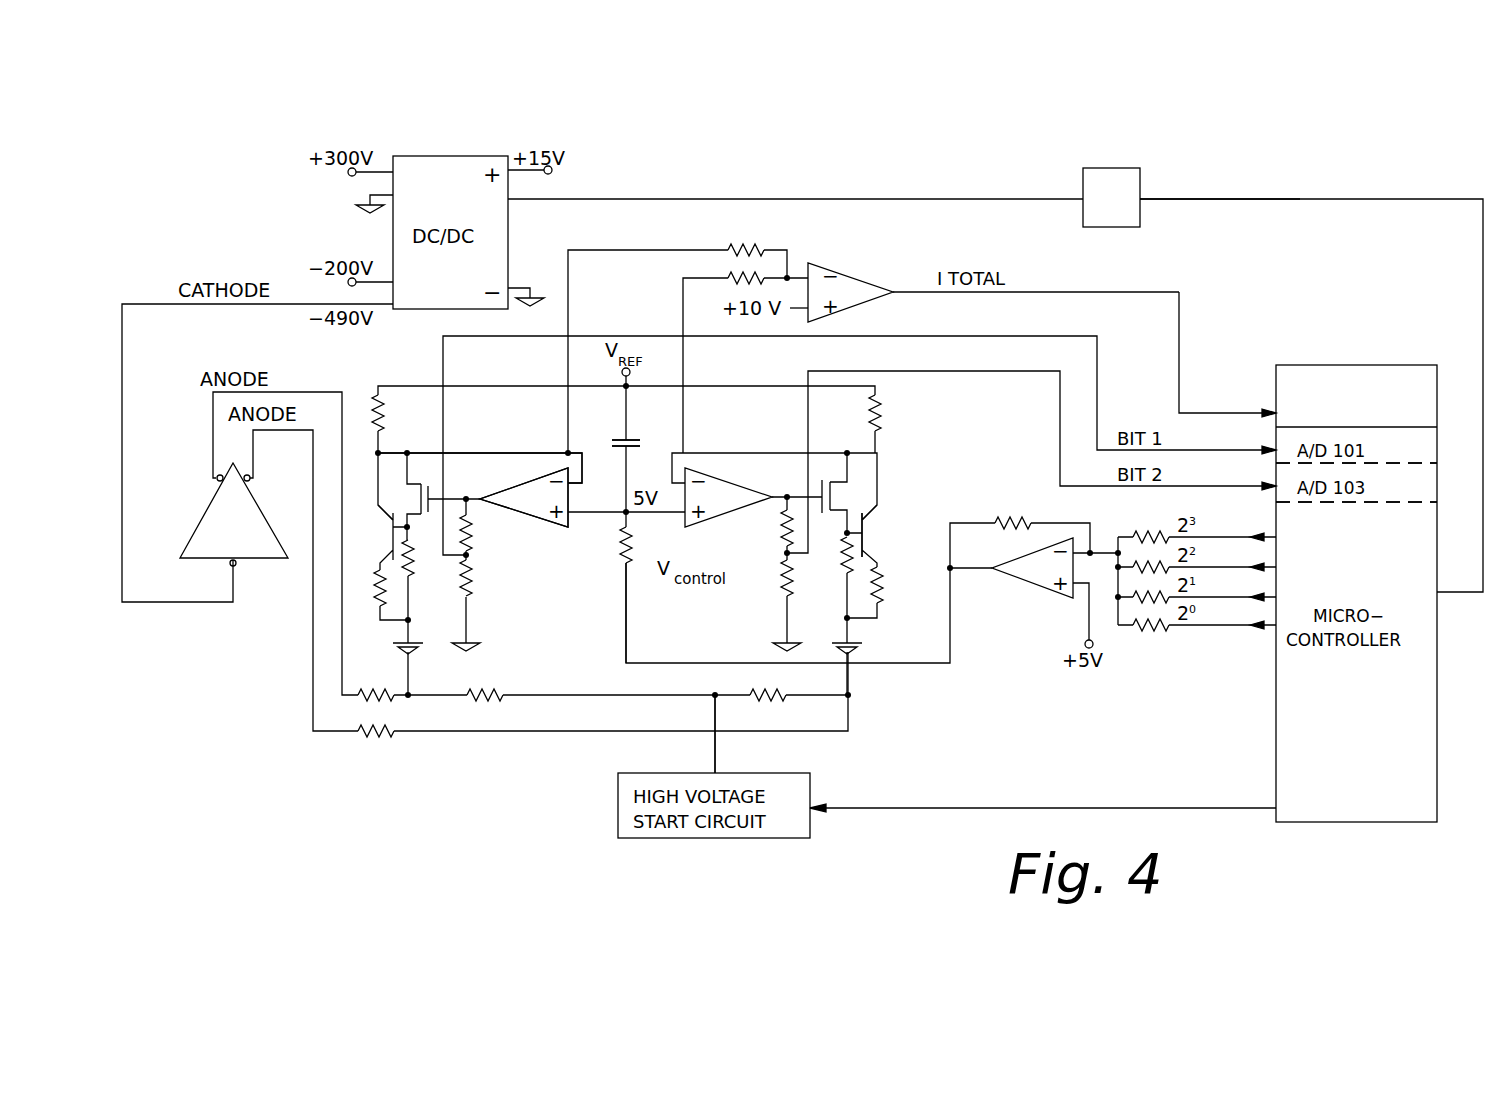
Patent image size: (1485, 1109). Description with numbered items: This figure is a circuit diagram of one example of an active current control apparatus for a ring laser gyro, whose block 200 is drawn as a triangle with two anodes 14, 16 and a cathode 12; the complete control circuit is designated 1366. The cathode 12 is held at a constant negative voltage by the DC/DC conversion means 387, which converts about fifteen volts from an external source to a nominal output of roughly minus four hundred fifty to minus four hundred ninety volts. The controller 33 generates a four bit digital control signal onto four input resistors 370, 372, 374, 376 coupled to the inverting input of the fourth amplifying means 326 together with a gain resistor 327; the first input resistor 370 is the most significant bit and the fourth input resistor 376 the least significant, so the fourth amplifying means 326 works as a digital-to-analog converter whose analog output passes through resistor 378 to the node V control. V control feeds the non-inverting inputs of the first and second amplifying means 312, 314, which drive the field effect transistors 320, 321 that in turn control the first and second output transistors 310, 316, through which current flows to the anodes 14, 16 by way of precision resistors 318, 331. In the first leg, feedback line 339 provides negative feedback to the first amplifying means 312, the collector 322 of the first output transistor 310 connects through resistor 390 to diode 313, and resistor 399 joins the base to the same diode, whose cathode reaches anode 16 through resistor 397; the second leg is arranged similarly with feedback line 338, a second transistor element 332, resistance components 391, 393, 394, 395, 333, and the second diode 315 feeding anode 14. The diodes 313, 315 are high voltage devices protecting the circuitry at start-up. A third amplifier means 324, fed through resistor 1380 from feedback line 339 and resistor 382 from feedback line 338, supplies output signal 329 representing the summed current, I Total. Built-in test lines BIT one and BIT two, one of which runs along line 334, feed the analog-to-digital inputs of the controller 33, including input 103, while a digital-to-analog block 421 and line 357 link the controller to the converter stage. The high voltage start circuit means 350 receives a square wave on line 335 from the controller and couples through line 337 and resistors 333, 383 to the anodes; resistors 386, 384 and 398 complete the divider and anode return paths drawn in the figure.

The DC/DC conversion means 387 is at (493, 162).
The D/A converter 421 is at (1111, 197).
The D/A output line 357 is at (1243, 199).
The control circuit 1366 is at (1475, 132).
The resistor 1380 is at (760, 250).
The resistor 382 is at (728, 278).
The third amplifier means 324 is at (855, 276).
The output signal 329 is at (1085, 292).
The feedback line 334 is at (1020, 336).
The precision resistor 318 is at (386, 424).
The precision resistor 331 is at (882, 412).
The feedback line 339 is at (483, 453).
The resistor 395 is at (636, 440).
The field effect transistor 320 is at (440, 496).
The first amplifying means 312 is at (557, 528).
The first output transistor 310 is at (400, 520).
The collector 322 is at (393, 545).
The resistor 390 is at (380, 606).
The resistor 399 is at (415, 575).
The diode 313 is at (423, 650).
The resistor 386 is at (474, 542).
The resistor 384 is at (474, 594).
The second amplifying means 314 is at (632, 545).
The resistor 378 is at (617, 566).
The feedback line 338 is at (718, 453).
The field effect transistor 321 is at (810, 490).
The second output transistor 316 is at (873, 515).
The transistor 332 is at (866, 538).
The resistance component 391 is at (778, 540).
The resistance component 393 is at (778, 597).
The resistor 394 is at (847, 540).
The second diode 315 is at (862, 648).
The gain resistor 327 is at (1027, 517).
The fourth amplifying means 326 is at (1062, 596).
The first input resistor 370 is at (1212, 536).
The input resistor 372 is at (1212, 566).
The input resistor 374 is at (1212, 596).
The fourth input resistor 376 is at (1212, 624).
The controller 33 is at (1356, 593).
The second analog-to-digital input 103 is at (1418, 502).
The resistor 397 is at (385, 700).
The resistor 383 is at (495, 700).
The resistor 333 is at (778, 700).
The resistor 398 is at (385, 736).
The line 337 is at (716, 745).
The high voltage start circuit means 350 is at (790, 838).
The line 335 is at (1080, 808).
The gas discharge tube 200 is at (234, 510).
The anode 14 is at (218, 482).
The anode 16 is at (249, 482).
The cathode 12 is at (233, 566).